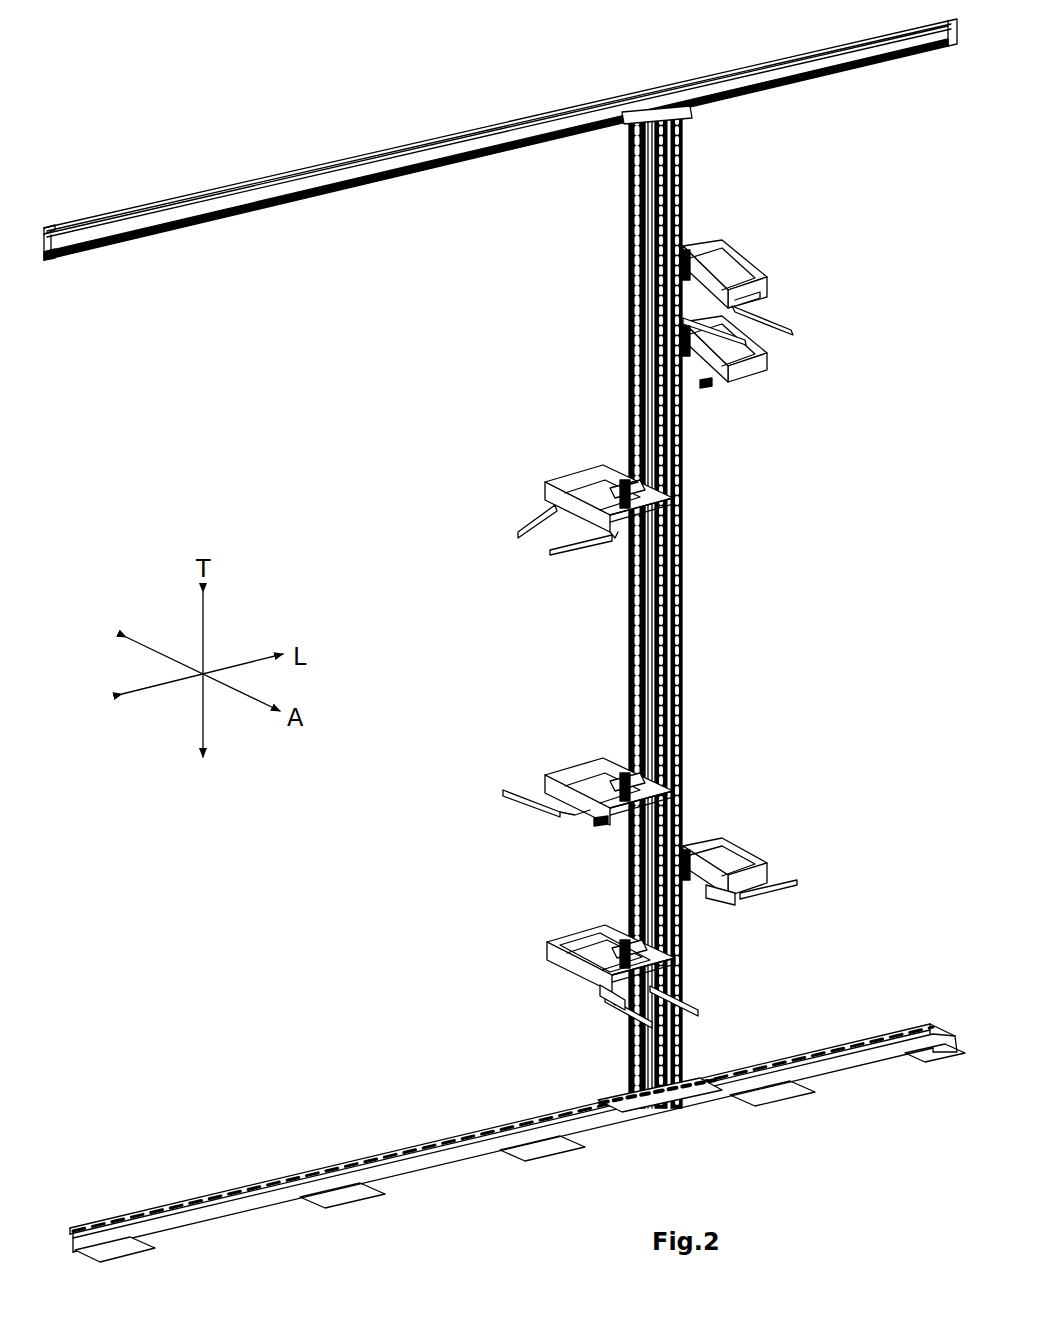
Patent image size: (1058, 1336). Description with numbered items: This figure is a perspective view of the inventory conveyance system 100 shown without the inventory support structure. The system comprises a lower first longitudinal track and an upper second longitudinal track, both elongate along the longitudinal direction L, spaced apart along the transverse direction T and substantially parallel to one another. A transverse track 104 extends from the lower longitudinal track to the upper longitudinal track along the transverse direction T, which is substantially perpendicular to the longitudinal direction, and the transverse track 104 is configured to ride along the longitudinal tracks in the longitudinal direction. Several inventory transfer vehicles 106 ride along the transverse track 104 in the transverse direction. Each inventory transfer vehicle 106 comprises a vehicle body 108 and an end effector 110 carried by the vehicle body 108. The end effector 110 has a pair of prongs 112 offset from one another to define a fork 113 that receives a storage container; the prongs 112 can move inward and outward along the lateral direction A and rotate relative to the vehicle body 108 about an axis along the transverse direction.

The inventory conveyance system 100 is at (382, 95).
The transverse track 104 is at (690, 593).
The inventory transfer vehicle 106 is at (754, 273).
The vehicle body 108 is at (547, 955).
The end effector 110 is at (583, 1002).
The prongs 112 is at (635, 1003).
The fork 113 is at (700, 1000).